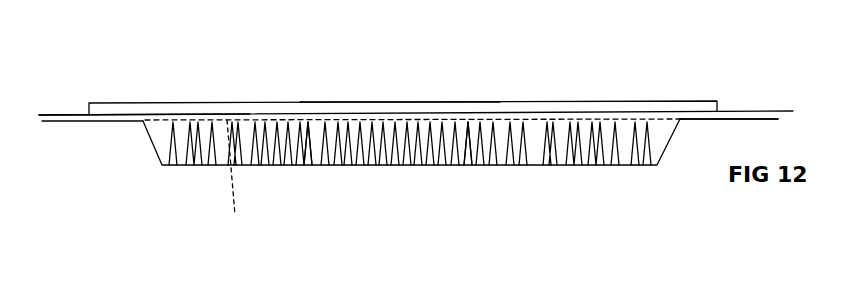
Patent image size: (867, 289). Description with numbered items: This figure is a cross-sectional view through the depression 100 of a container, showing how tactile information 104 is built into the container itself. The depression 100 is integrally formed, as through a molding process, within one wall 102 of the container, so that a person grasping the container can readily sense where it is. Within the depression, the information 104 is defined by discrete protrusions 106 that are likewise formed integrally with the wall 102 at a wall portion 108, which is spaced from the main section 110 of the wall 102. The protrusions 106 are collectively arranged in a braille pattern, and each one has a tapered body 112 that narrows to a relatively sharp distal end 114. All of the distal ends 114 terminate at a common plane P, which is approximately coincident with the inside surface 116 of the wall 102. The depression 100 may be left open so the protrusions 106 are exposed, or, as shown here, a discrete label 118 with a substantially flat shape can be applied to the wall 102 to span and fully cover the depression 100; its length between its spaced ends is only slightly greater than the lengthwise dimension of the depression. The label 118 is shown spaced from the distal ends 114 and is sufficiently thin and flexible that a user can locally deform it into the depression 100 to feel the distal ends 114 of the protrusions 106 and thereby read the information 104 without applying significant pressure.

The depression 100 is at (158, 145).
The wall 102 is at (723, 111).
The information 104 is at (298, 118).
The protrusions 106 is at (495, 160).
The wall portion 108 is at (318, 150).
The main section 110 is at (57, 113).
The tapered body 112 is at (467, 160).
The distal end 114 is at (465, 120).
The inside surface 116 is at (712, 119).
The discrete label 118 is at (387, 109).
The common plane P is at (236, 178).